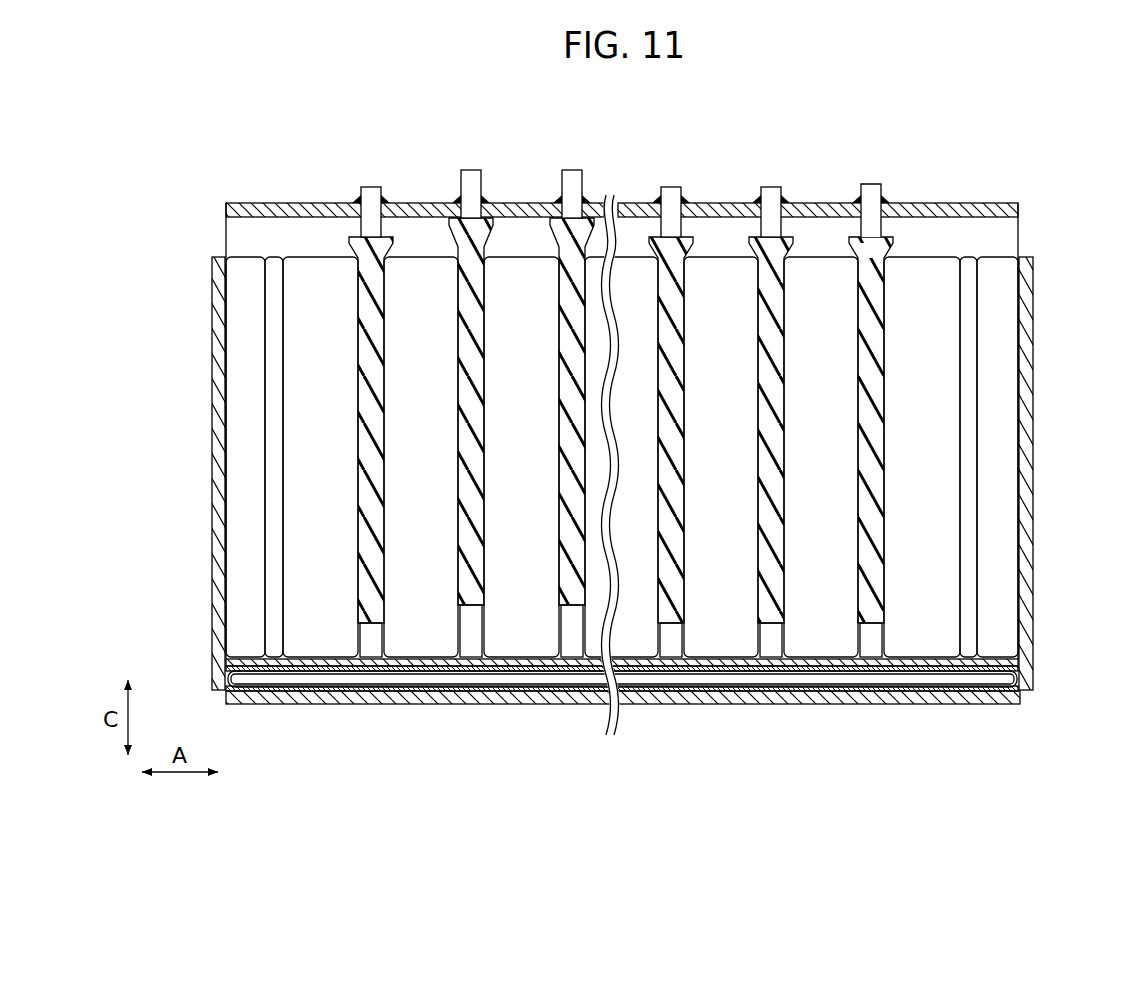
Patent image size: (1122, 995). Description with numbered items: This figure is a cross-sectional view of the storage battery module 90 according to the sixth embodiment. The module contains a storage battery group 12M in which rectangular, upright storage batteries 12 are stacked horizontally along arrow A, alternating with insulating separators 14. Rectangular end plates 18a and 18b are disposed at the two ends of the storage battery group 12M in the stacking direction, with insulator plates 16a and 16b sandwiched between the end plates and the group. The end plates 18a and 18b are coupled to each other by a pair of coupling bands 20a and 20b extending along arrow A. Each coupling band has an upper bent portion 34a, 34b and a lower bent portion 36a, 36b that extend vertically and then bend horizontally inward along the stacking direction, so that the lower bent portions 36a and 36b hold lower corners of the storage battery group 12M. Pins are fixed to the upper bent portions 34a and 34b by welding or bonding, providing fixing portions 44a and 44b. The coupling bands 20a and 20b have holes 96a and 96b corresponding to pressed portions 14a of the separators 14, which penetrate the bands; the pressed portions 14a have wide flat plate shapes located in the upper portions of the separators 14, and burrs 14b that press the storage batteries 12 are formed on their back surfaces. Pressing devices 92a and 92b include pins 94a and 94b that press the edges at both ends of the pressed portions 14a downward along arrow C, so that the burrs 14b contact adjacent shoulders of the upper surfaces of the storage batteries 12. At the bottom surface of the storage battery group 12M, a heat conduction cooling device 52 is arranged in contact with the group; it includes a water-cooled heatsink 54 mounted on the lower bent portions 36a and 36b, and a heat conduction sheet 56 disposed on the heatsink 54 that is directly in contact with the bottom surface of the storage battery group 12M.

The storage battery module 90 is at (565, 106).
The coupling band 20a is at (415, 177).
The coupling band 20b is at (269, 200).
The upper bent portion 34a is at (818, 184).
The upper bent portion 34b is at (813, 207).
The fixing portion 44a is at (721, 162).
The fixing portion 44b is at (758, 198).
The pressed portion 14a is at (857, 238).
The burr 14b is at (858, 250).
The separator 14 is at (478, 596).
The pressing device 92a is at (933, 180).
The pressing device 92b is at (890, 172).
The pin 94a is at (929, 182).
The pin 94b is at (877, 190).
The hole 96a is at (933, 227).
The hole 96b is at (862, 212).
The end plate 18b is at (245, 550).
The insulator plate 16b is at (270, 578).
The end plate 18a is at (998, 550).
The insulator plate 16a is at (975, 578).
The storage battery 12 is at (420, 647).
The storage battery group 12M is at (542, 755).
The lower bent portion 36a is at (623, 724).
The lower bent portion 36b is at (718, 698).
The heatsink 54 is at (950, 680).
The heat conduction sheet 56 is at (950, 660).
The heat conduction cooling device 52 is at (1033, 700).